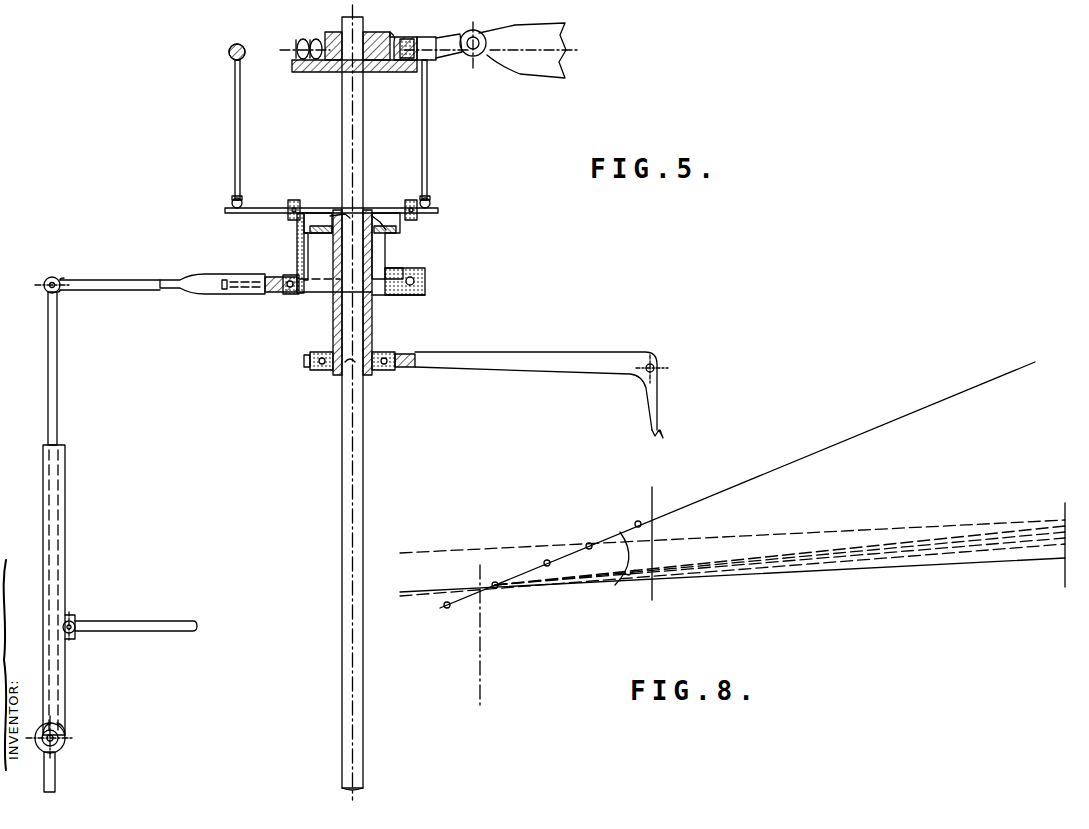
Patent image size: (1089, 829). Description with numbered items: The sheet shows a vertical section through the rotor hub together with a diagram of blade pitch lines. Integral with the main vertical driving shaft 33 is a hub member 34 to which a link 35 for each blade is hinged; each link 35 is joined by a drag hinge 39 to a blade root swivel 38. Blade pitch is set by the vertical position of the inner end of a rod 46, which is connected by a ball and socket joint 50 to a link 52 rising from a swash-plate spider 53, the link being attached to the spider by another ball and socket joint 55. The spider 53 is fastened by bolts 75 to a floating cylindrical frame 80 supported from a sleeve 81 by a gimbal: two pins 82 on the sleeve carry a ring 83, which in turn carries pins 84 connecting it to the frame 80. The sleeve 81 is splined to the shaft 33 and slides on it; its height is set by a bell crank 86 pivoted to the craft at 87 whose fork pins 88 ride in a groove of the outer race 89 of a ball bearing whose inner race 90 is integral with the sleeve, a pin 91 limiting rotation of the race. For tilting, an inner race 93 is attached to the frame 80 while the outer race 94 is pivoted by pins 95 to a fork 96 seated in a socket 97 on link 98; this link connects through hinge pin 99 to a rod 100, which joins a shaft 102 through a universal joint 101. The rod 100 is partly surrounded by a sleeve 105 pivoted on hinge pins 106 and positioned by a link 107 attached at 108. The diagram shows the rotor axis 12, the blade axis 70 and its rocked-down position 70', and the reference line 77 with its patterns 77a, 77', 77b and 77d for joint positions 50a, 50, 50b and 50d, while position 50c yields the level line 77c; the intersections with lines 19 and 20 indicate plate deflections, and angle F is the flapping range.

In FIG. 5, the main vertical driving shaft 33 is at (363, 33).
In FIG. 5, the hub member 34 is at (325, 66).
In FIG. 5, the link 35 is at (448, 55).
In FIG. 5, the blade root swivel 38 is at (560, 38).
In FIG. 5, the drag hinge 39 is at (478, 33).
In FIG. 5, the rod 46 is at (229, 52).
In FIG. 5, the ball and socket joint 50 is at (244, 46).
In FIG. 8, the ball and socket joint 50 is at (497, 590).
In FIG. 5, the link 52 is at (234, 88).
In FIG. 5, the swash-plate spider 53 is at (263, 208).
In FIG. 5, the ball and socket joint 55 is at (232, 203).
In FIG. 5, the bolts 75 is at (294, 204).
In FIG. 5, the floating cylindrical frame 80 is at (297, 240).
In FIG. 5, the sleeve 81 is at (333, 320).
In FIG. 5, the pins 82 is at (332, 216).
In FIG. 5, the ring 83 is at (393, 233).
In FIG. 5, the pins 84 is at (352, 222).
In FIG. 5, the bell crank 86 is at (652, 432).
In FIG. 5, the pivot 87 is at (640, 372).
In FIG. 5, the pins 88 is at (372, 352).
In FIG. 5, the outer race 89 is at (392, 371).
In FIG. 5, the inner race 90 is at (321, 371).
In FIG. 5, the pin 91 is at (310, 360).
In FIG. 5, the inner race 93 is at (405, 296).
In FIG. 5, the outer race 94 is at (426, 276).
In FIG. 5, the pins 95 is at (372, 300).
In FIG. 5, the fork 96 is at (272, 294).
In FIG. 5, the socket 97 is at (250, 274).
In FIG. 5, the link 98 is at (157, 283).
In FIG. 5, the hinge pin 99 is at (58, 280).
In FIG. 5, the rod 100 is at (57, 340).
In FIG. 5, the universal joint 101 is at (62, 726).
In FIG. 5, the shaft 102 is at (55, 765).
In FIG. 5, the sleeve 105 is at (65, 478).
In FIG. 5, the hinge pins 106 is at (66, 736).
In FIG. 5, the link 107 is at (163, 620).
In FIG. 5, the pivot 108 is at (76, 622).
In FIG. 8, the blade axis 70 is at (737, 485).
In FIG. 8, the blade axis position 70' is at (732, 583).
In FIG. 8, the reference line 77 is at (843, 421).
In FIG. 8, the reference line pattern 77a is at (702, 572).
In FIG. 8, the reference line pattern 77b is at (836, 540).
In FIG. 8, the reference line position 77c is at (460, 553).
In FIG. 8, the reference line pattern 77d is at (744, 528).
In FIG. 8, the reference line pattern 77' is at (732, 576).
In FIG. 8, the rotor axis 12 is at (482, 649).
In FIG. 8, the plate 19 is at (652, 502).
In FIG. 8, the plate 20 is at (1065, 506).
In FIG. 8, the joint position 50a is at (448, 609).
In FIG. 8, the joint position 50b is at (549, 559).
In FIG. 8, the joint position 50c is at (590, 542).
In FIG. 8, the joint position 50d is at (640, 520).
In FIG. 8, the flapping angle F is at (619, 567).